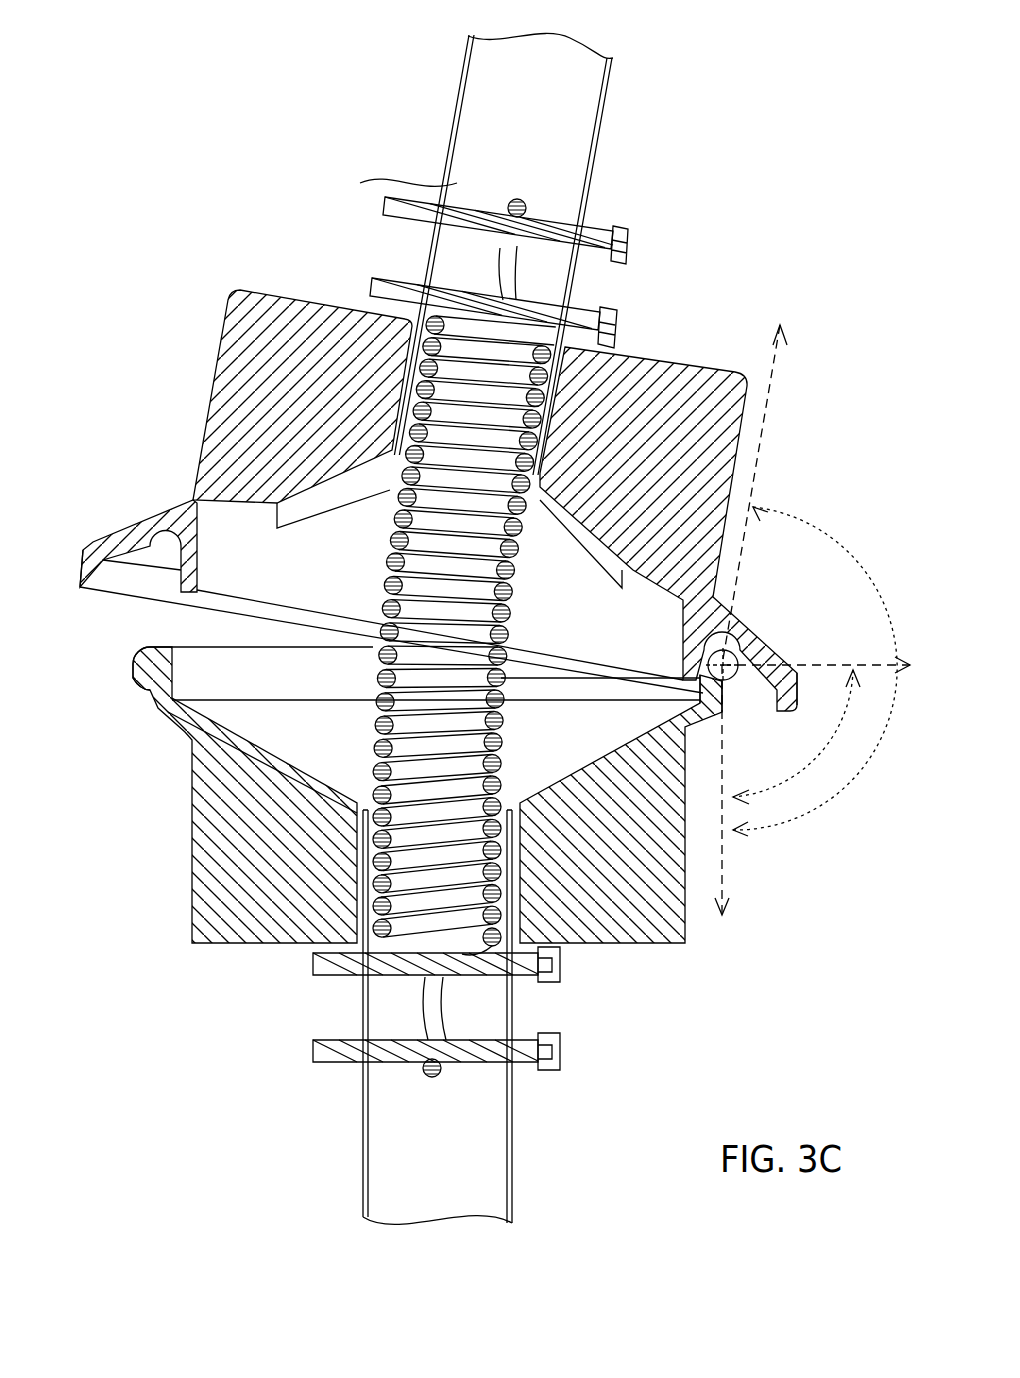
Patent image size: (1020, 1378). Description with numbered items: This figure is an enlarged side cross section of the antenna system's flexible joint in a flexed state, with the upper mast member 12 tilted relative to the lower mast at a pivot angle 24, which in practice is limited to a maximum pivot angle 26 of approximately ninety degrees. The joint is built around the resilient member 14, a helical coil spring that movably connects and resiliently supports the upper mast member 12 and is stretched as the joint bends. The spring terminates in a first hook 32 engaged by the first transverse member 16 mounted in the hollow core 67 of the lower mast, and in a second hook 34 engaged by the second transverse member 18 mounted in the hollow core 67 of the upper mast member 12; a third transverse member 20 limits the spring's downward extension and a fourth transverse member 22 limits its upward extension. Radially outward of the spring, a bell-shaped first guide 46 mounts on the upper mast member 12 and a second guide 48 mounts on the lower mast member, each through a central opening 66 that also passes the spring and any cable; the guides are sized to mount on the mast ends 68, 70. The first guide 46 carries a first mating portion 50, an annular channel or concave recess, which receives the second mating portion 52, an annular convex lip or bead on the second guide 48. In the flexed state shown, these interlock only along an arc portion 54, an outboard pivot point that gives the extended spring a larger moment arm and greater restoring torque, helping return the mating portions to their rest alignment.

The upper mast member 12 is at (567, 110).
The resilient member 14 is at (485, 415).
The first transverse member 16 is at (340, 1053).
The second transverse member 18 is at (452, 191).
The third transverse member 20 is at (333, 965).
The fourth transverse member 22 is at (470, 290).
The pivot angle 24 is at (863, 570).
The maximum pivot angle 26 is at (840, 727).
The first hook 32 is at (435, 1012).
The second hook 34 is at (505, 270).
The first guide 46 is at (680, 480).
The second guide 48 is at (640, 835).
The first mating portion 50 is at (108, 570).
The second mating portion 52 is at (147, 665).
The arc portion 54 is at (706, 661).
The central opening 66 is at (413, 347).
The hollow core 67 is at (497, 90).
The end of lower mast member 68 is at (577, 943).
The end of upper mast member 70 is at (560, 450).